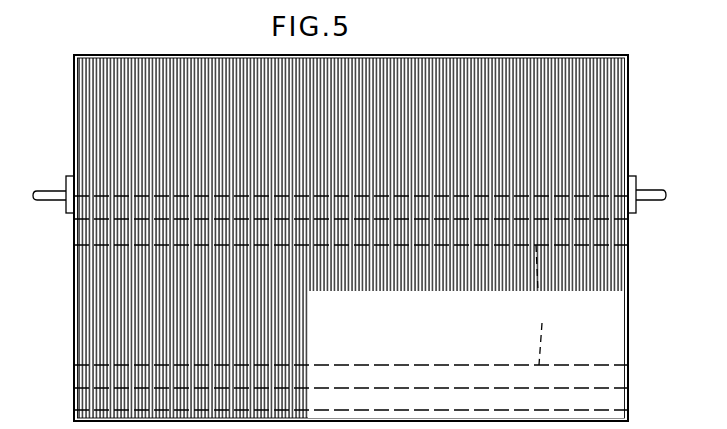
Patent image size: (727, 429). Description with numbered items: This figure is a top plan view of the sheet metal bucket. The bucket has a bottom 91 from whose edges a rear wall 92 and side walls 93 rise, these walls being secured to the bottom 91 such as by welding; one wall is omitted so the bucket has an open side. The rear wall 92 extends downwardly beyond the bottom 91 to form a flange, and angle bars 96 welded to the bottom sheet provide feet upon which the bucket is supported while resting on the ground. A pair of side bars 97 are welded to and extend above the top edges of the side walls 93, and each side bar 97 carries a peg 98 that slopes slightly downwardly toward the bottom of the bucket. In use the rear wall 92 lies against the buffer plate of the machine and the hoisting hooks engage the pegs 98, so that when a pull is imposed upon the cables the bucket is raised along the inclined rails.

The bottom 91 is at (401, 315).
The rear wall 92 is at (533, 47).
The side walls 93 is at (68, 312).
The angle bars 96 is at (543, 305).
The side bars 97 is at (60, 208).
The peg 98 is at (39, 183).